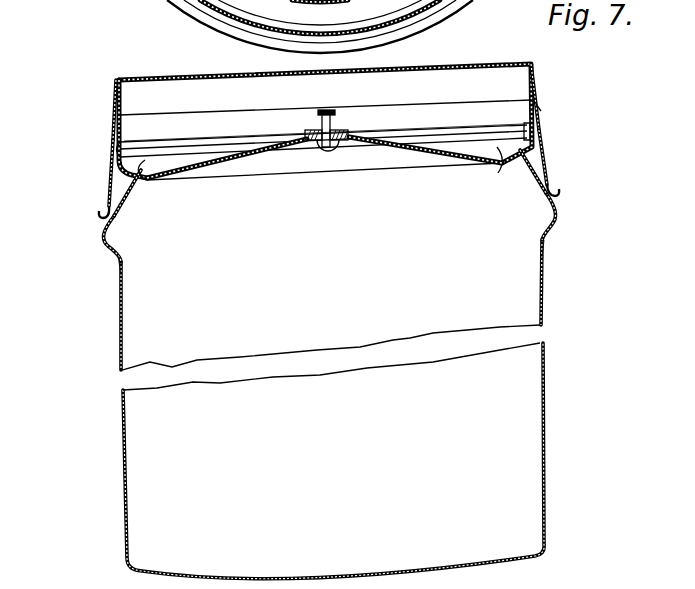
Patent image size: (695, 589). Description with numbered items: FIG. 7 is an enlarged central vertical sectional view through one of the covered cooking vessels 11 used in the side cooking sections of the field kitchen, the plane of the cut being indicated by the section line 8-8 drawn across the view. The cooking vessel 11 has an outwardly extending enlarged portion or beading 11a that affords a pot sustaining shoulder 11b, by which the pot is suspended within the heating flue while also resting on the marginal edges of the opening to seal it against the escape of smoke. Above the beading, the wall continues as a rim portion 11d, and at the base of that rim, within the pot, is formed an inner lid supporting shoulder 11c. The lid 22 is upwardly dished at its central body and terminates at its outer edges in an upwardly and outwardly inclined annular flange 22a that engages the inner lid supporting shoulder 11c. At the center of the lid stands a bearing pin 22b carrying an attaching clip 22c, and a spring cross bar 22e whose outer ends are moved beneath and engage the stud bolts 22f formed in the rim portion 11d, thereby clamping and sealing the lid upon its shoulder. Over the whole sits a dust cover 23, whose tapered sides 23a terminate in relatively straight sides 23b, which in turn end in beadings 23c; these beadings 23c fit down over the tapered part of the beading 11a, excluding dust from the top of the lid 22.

The section line 8- 8 is at (119, 105).
The cooking vessel 11 is at (555, 203).
The beading 11a is at (118, 215).
The pot sustaining shoulder 11b is at (572, 242).
The inner lid supporting shoulder 11c is at (140, 180).
The rim portion 11d is at (542, 108).
The lid 22 is at (397, 152).
The annular flange 22a is at (500, 173).
The bearing pin 22b is at (317, 147).
The attaching clip 22c is at (317, 116).
The spring cross bar 22e is at (208, 141).
The stud bolts 22f is at (127, 143).
The dust cover 23 is at (485, 63).
The tapered sides 23a is at (568, 79).
The straight sides 23b is at (572, 128).
The beadings 23c is at (556, 190).